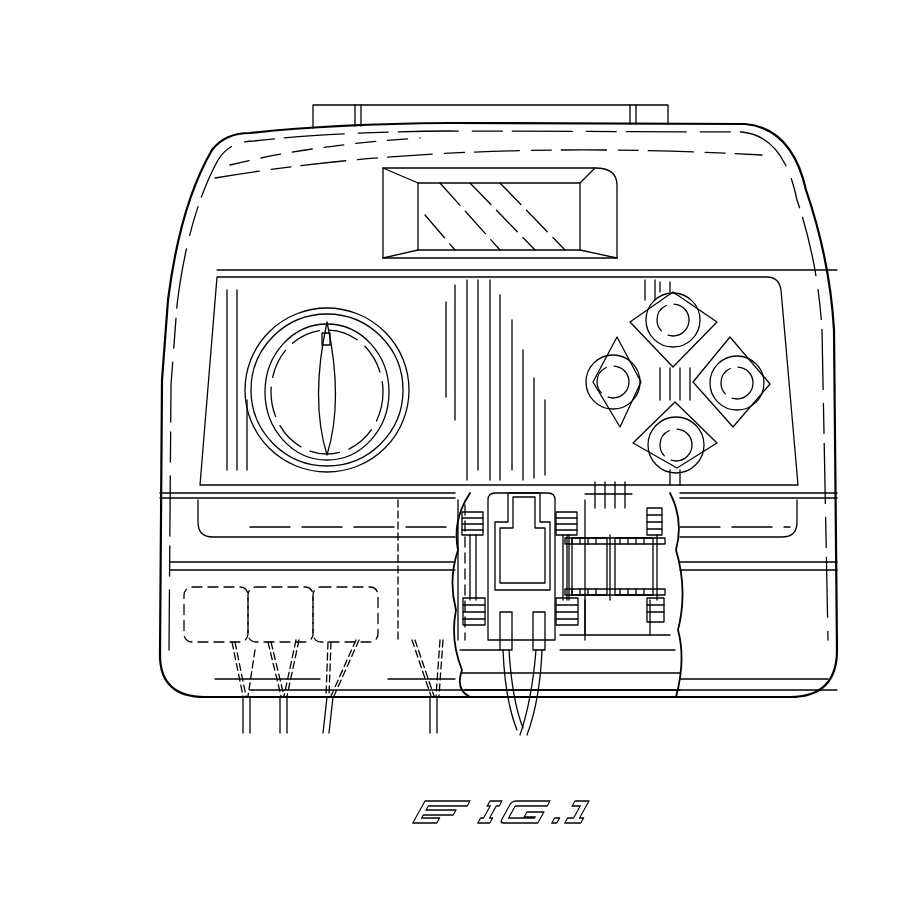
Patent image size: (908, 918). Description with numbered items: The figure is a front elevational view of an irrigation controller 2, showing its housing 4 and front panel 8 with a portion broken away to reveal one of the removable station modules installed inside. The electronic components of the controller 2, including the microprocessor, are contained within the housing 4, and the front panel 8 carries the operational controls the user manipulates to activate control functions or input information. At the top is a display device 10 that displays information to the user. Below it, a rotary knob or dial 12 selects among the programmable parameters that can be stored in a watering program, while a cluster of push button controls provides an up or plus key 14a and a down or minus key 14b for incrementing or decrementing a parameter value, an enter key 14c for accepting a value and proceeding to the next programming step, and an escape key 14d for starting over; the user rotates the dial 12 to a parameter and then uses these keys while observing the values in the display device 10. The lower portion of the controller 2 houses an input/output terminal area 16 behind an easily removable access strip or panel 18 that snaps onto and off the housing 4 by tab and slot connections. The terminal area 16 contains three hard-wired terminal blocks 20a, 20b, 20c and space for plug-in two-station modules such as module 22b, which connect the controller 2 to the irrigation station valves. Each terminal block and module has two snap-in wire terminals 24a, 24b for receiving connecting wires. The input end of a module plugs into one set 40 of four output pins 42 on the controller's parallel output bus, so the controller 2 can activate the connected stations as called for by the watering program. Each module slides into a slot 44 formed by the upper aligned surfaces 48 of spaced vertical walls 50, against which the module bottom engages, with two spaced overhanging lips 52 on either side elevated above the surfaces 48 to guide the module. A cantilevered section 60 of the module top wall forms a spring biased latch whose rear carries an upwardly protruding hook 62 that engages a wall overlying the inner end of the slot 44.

The controller 2 is at (372, 88).
The housing 4 is at (709, 154).
The front panel 8 is at (262, 192).
The display device 10 is at (560, 221).
The rotary knob or dial 12 is at (332, 300).
The up/plus key 14a is at (688, 322).
The down/minus key 14b is at (694, 450).
The enter key 14c is at (762, 387).
The escape key 14d is at (602, 380).
The input/output terminal area 16 is at (630, 648).
The access strip or panel 18 is at (790, 640).
The terminal block 20a is at (207, 622).
The terminal block 20b is at (270, 632).
The terminal block 20c is at (377, 640).
The two-station module 22b is at (458, 597).
The snap-in wire terminal 24a is at (492, 648).
The snap-in wire terminal 24b is at (553, 646).
The set of output pins 40 is at (614, 522).
The output pins 42 is at (592, 484).
The slot 44 is at (645, 578).
The upper aligned surfaces 48 is at (606, 600).
The vertical walls 50 is at (595, 606).
The overhanging lips 52 is at (662, 525).
The spring biased latch section 60 is at (520, 555).
The hook 62 is at (528, 512).